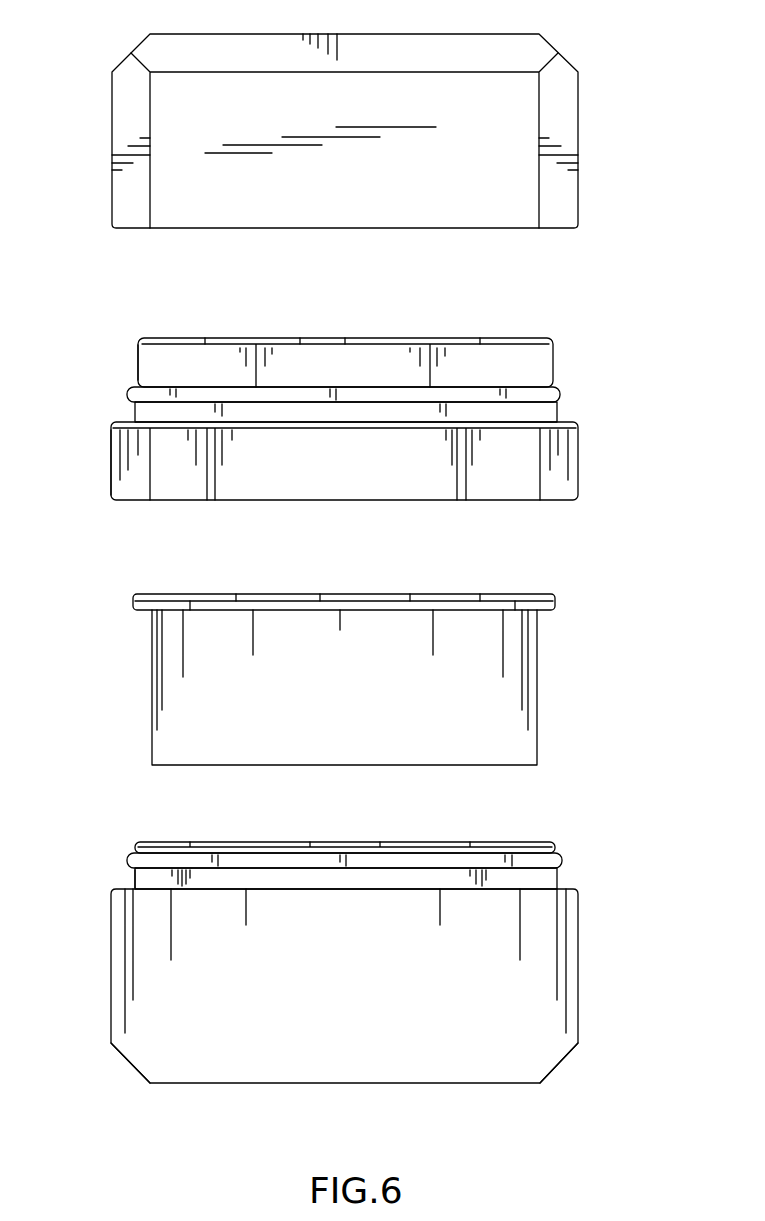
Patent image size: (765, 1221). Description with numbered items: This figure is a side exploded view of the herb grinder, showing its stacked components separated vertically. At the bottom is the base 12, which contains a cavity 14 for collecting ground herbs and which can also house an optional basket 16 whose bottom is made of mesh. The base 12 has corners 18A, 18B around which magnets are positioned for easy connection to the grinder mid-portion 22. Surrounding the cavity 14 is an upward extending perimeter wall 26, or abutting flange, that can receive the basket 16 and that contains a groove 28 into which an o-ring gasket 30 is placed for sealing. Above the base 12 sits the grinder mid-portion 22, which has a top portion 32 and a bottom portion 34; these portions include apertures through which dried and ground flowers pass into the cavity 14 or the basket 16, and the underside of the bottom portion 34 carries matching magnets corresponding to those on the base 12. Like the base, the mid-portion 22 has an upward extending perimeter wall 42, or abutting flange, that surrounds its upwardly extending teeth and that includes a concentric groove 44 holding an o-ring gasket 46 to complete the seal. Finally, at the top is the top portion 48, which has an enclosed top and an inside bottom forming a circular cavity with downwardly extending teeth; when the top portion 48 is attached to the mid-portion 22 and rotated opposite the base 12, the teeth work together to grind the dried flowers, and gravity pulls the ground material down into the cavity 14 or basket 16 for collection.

The top portion 48 is at (578, 117).
The top portion of the grinder mid-portion 32 is at (553, 352).
The upward extending perimeter wall 42 is at (139, 358).
The concentric groove 44 is at (560, 395).
The o-ring gasket 46 is at (557, 408).
The grinder mid-portion 22 is at (578, 463).
The bottom portion of the grinder mid-portion 34 is at (111, 478).
The basket 16 is at (537, 675).
The cavity 14 is at (548, 842).
The groove 28 is at (562, 859).
The o-ring gasket 30 is at (557, 874).
The upward extending perimeter wall 26 is at (135, 876).
The base 12 is at (578, 975).
The corner of the base 18A is at (130, 1067).
The corner of the base 18B is at (560, 1067).